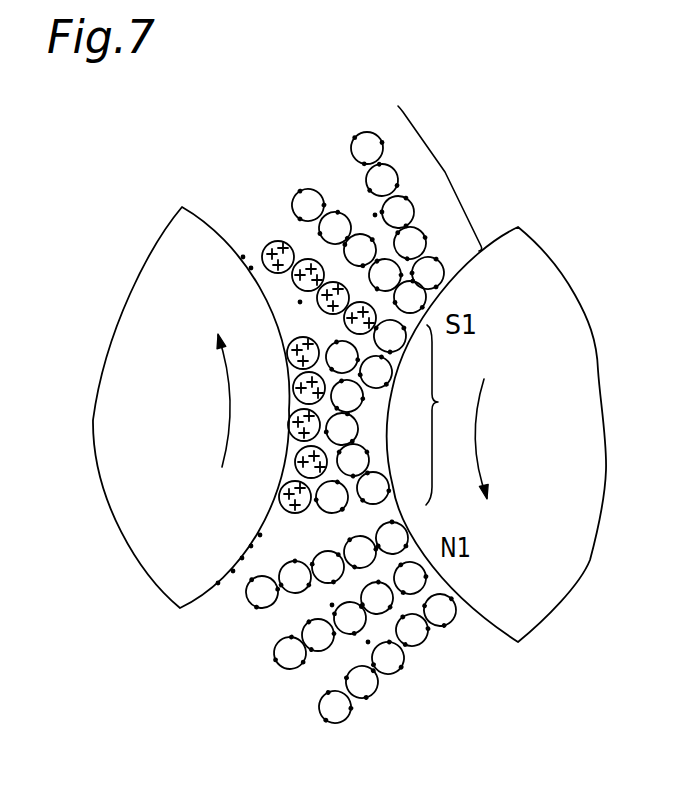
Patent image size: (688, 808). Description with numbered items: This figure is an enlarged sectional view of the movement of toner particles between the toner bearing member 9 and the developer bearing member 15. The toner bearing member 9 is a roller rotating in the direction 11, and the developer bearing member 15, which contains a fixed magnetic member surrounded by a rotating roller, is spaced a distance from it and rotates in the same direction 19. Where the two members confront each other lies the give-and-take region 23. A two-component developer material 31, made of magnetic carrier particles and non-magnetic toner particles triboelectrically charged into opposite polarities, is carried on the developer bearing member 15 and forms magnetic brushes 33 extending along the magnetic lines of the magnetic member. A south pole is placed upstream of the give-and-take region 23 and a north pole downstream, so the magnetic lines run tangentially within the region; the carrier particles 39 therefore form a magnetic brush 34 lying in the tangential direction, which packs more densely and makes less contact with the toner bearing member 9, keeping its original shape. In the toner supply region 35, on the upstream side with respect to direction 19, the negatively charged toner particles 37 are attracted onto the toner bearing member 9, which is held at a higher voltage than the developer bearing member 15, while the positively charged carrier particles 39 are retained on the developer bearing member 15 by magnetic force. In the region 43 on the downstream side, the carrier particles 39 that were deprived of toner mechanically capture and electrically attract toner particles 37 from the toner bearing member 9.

The toner bearing member 9 is at (163, 270).
The rotational direction of toner bearing member 11 is at (229, 408).
The developer bearing member 15 is at (531, 268).
The rotational direction of developer bearing member 19 is at (477, 451).
The give-and-take region 23 is at (370, 435).
The two-component developer material 31 is at (347, 175).
The magnetic brushes 33 is at (416, 200).
The magnetic brush 34 is at (447, 415).
The toner supply region 35 is at (328, 173).
The toner particles 37 is at (305, 226).
The carrier particles 39 is at (335, 708).
The downstream region 43 is at (272, 626).